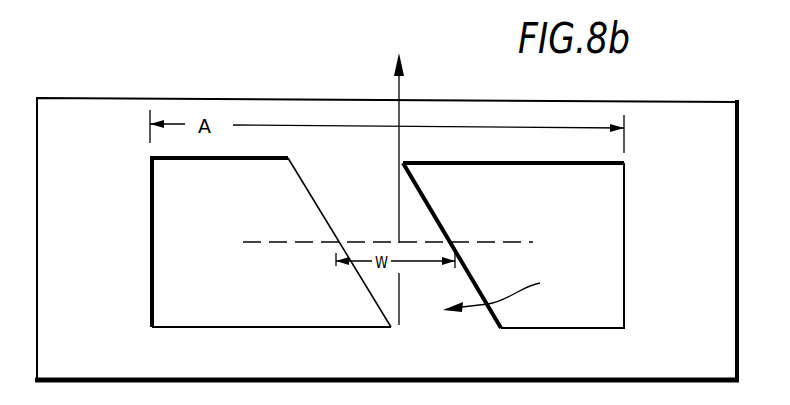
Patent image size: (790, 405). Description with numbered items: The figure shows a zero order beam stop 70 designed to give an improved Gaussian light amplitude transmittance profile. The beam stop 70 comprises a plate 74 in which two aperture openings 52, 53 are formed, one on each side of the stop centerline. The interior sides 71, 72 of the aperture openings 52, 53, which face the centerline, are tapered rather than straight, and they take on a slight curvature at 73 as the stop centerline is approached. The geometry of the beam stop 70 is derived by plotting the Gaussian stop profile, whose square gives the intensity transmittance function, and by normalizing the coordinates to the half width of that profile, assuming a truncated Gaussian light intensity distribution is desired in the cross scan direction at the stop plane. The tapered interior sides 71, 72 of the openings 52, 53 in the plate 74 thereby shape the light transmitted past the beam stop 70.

The plate 74 is at (133, 98).
The aperture opening 53 is at (240, 242).
The aperture opening 52 is at (542, 245).
The interior side 72 is at (303, 190).
The interior side 71 is at (439, 212).
The slight curvature 73 is at (413, 167).
The zero order beam stop 70 is at (575, 293).